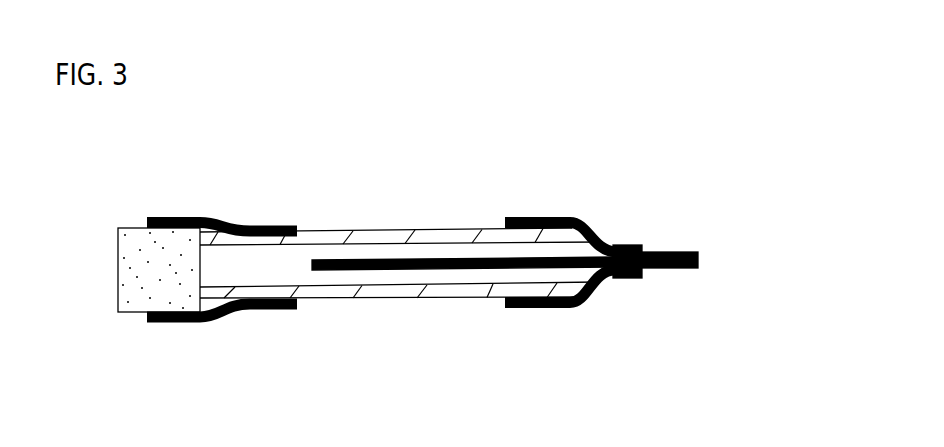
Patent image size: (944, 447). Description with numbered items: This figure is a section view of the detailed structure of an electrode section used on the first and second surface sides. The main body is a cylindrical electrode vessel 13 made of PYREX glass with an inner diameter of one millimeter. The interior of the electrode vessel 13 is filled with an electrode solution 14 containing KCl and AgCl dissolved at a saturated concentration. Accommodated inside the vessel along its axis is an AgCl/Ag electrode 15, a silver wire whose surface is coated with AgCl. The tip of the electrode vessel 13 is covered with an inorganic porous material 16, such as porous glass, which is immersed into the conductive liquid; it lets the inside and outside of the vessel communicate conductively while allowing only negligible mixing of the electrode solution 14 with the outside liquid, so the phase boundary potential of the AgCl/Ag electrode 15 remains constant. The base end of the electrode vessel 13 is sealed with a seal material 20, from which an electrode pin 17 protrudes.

The electrode vessel 13 is at (325, 302).
The electrode solution 14 is at (298, 260).
The AgCl/Ag electrode 15 is at (423, 267).
The inorganic porous material 16 is at (145, 245).
The electrode pin 17 is at (698, 250).
The seal material 20 is at (213, 217).